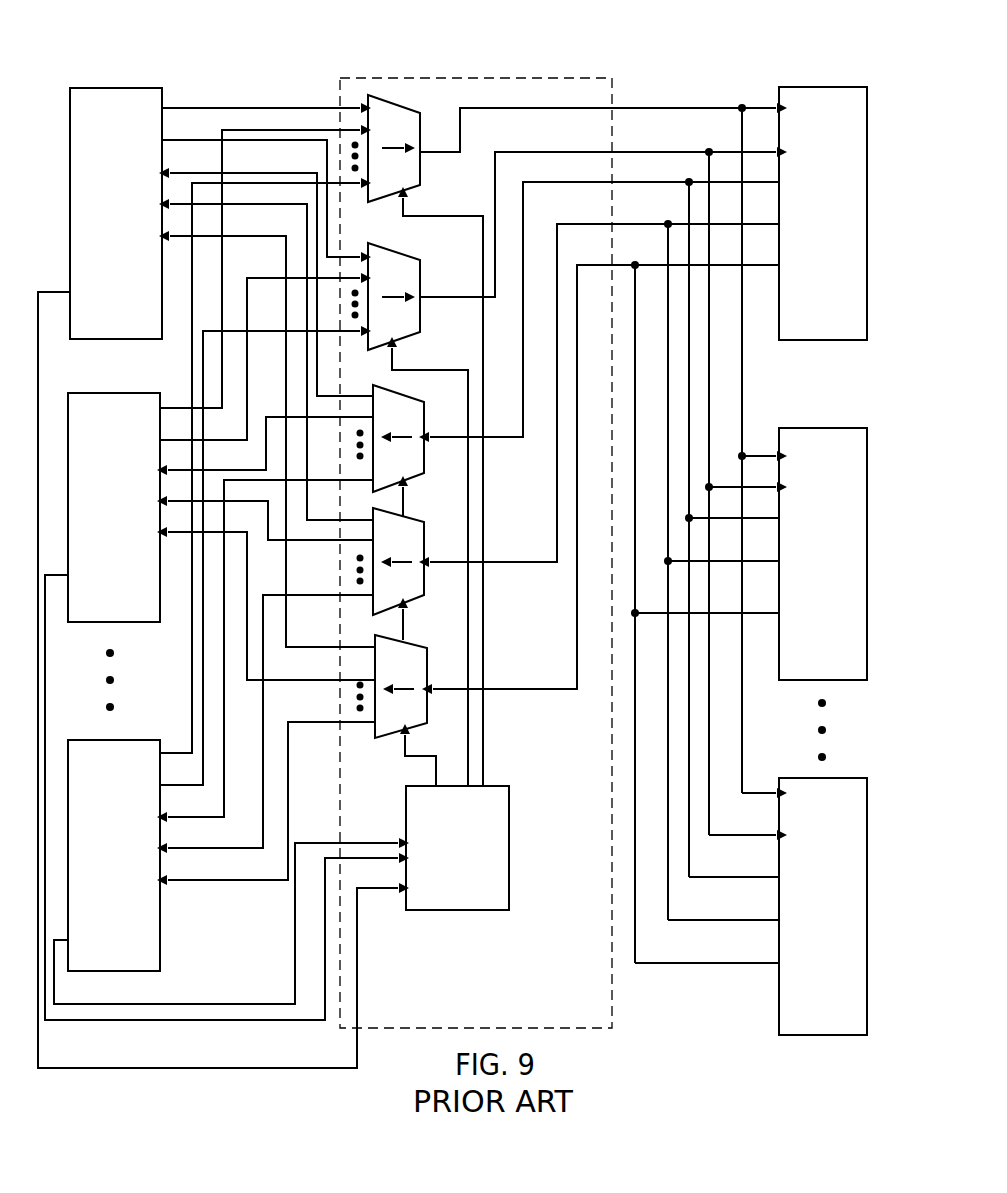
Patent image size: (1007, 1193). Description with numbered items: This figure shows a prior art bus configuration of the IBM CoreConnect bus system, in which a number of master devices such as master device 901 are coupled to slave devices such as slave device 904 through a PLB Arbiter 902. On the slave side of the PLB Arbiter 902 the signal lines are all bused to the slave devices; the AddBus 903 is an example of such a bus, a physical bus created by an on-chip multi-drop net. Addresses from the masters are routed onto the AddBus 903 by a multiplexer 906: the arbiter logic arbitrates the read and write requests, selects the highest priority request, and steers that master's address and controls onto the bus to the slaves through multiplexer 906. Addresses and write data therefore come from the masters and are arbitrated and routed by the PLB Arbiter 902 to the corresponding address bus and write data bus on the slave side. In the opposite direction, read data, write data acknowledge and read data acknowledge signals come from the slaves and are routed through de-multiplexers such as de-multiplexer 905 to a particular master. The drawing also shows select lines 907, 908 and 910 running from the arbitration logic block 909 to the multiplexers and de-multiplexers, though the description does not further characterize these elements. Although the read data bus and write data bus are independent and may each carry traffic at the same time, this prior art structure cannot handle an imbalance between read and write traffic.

The master device 901 is at (165, 96).
The PLB Arbiter 902 is at (572, 77).
The AddBus 903 is at (675, 100).
The slave device 904 is at (858, 340).
The de-multiplexer 905 is at (413, 477).
The multiplexer 906 is at (420, 183).
The address mux select line 907 is at (483, 725).
The write data mux select line 908 is at (468, 745).
The arbitration/priority logic (APL) 909 is at (509, 875).
The read data ack mux select line 910 is at (405, 763).